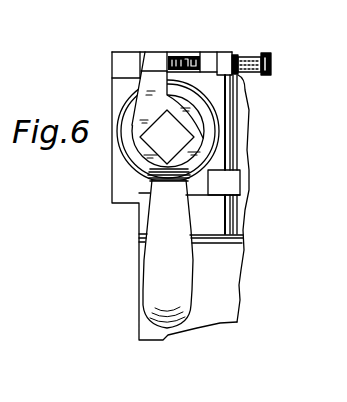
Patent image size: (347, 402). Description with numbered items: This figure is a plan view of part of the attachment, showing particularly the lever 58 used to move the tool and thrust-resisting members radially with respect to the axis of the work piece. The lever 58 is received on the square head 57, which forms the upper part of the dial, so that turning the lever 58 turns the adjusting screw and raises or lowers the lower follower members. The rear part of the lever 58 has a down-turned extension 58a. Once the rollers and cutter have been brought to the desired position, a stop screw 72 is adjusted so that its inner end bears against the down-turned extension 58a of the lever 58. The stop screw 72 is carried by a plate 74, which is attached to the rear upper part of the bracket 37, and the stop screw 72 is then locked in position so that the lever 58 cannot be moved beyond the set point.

The bracket 37 is at (238, 285).
The square head 57 is at (168, 131).
The lever 58 is at (160, 212).
The down-turned extension 58a is at (150, 60).
The stop screw 72 is at (255, 54).
The plate 74 is at (112, 64).